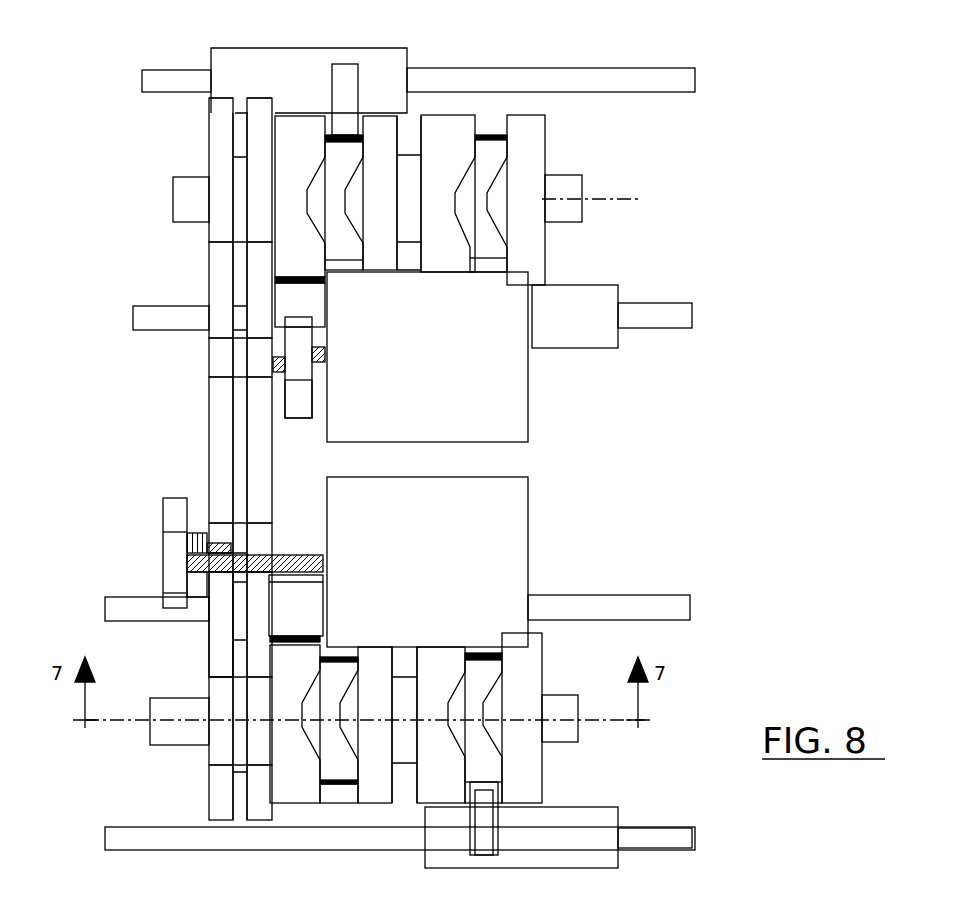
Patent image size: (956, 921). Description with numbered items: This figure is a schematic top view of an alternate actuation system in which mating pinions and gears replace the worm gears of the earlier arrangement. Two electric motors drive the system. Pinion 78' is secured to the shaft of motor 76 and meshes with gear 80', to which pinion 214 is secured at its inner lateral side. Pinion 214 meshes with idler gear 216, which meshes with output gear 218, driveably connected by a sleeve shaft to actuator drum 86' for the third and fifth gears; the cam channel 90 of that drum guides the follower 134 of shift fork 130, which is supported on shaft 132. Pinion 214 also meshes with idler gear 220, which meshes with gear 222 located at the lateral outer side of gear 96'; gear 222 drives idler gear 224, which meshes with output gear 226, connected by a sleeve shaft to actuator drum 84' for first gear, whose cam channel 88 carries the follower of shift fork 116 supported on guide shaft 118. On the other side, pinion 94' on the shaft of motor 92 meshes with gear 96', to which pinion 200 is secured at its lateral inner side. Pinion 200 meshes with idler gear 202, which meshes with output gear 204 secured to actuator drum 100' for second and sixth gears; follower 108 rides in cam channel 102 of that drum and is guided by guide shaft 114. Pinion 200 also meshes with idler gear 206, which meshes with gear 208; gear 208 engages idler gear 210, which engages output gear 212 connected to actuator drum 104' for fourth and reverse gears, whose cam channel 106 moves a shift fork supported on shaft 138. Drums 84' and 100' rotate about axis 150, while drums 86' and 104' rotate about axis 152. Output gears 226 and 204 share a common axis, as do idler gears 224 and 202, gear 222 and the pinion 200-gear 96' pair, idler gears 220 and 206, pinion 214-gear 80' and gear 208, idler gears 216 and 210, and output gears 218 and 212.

The guide shaft 114 is at (178, 80).
The actuator drum 100' is at (282, 145).
The follower 108 is at (345, 82).
The cam channel 102 is at (352, 182).
The cam channel 88 is at (490, 147).
The actuator drum 84' is at (575, 200).
The axis 150 is at (630, 200).
The shift fork 116 is at (598, 302).
The guide shaft 118 is at (672, 315).
The output gear 204 is at (258, 143).
The output gear 226 is at (222, 170).
The idler gear 202 is at (258, 262).
The idler gear 224 is at (222, 287).
The gear 222 is at (220, 360).
The pinion 200 is at (252, 367).
The idler gear 206 is at (255, 413).
The idler gear 220 is at (218, 422).
The gear 208 is at (257, 532).
The pinion 214 is at (220, 527).
The gear 80' is at (126, 547).
The pinion 78' is at (192, 565).
The shaft 138 is at (120, 605).
The idler gear 216 is at (218, 650).
The idler gear 210 is at (255, 655).
The output gear 218 is at (218, 773).
The output gear 212 is at (255, 778).
The actuator drum 104' is at (263, 767).
The cam channel 106 is at (338, 775).
The cam channel 90 is at (447, 792).
The follower 134 is at (483, 830).
The shift fork 130 is at (588, 855).
The shaft 132 is at (672, 838).
The actuator drum 86' is at (556, 718).
The axis 152 is at (580, 723).
The electric motor 92 is at (397, 363).
The electric motor 76 is at (397, 568).
The pinion 94' is at (312, 395).
The gear 96' is at (290, 437).